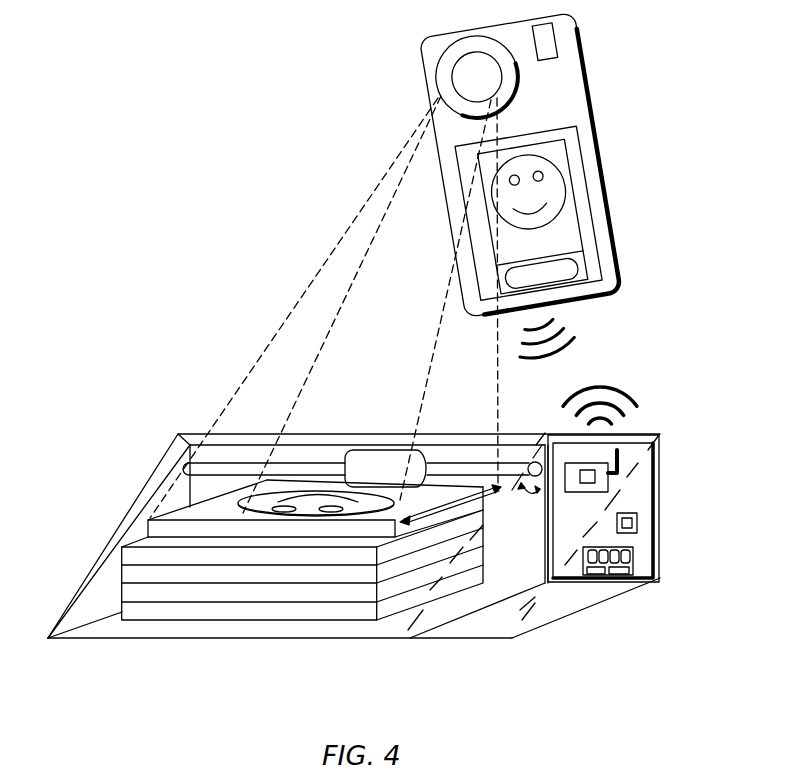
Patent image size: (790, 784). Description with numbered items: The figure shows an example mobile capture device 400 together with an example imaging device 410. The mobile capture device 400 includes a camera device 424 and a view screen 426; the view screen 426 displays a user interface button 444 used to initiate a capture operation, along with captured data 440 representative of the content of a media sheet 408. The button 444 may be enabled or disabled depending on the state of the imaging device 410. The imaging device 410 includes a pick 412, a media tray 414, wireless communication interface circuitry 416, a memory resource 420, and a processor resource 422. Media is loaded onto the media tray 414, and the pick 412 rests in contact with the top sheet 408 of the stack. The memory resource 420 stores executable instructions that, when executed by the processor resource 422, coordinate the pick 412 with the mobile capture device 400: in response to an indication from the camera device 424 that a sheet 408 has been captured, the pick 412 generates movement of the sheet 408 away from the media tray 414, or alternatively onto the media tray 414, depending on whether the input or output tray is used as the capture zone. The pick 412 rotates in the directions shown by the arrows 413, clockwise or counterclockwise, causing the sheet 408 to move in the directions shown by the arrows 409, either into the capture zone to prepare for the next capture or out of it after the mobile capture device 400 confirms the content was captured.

The mobile capture device 400 is at (586, 74).
The camera device 424 is at (516, 84).
The view screen 426 is at (580, 140).
The captured data 440 is at (567, 177).
The user interface (UI) button 444 is at (582, 266).
The media sheet 408 is at (146, 523).
The arrows 409 is at (490, 497).
The imaging device 410 is at (511, 639).
The pick 412 is at (369, 449).
The arrows 413 is at (528, 493).
The media tray 414 is at (330, 639).
The wireless communication interface circuitry 416 is at (595, 493).
The memory resource 420 is at (654, 582).
The processor resource 422 is at (638, 533).